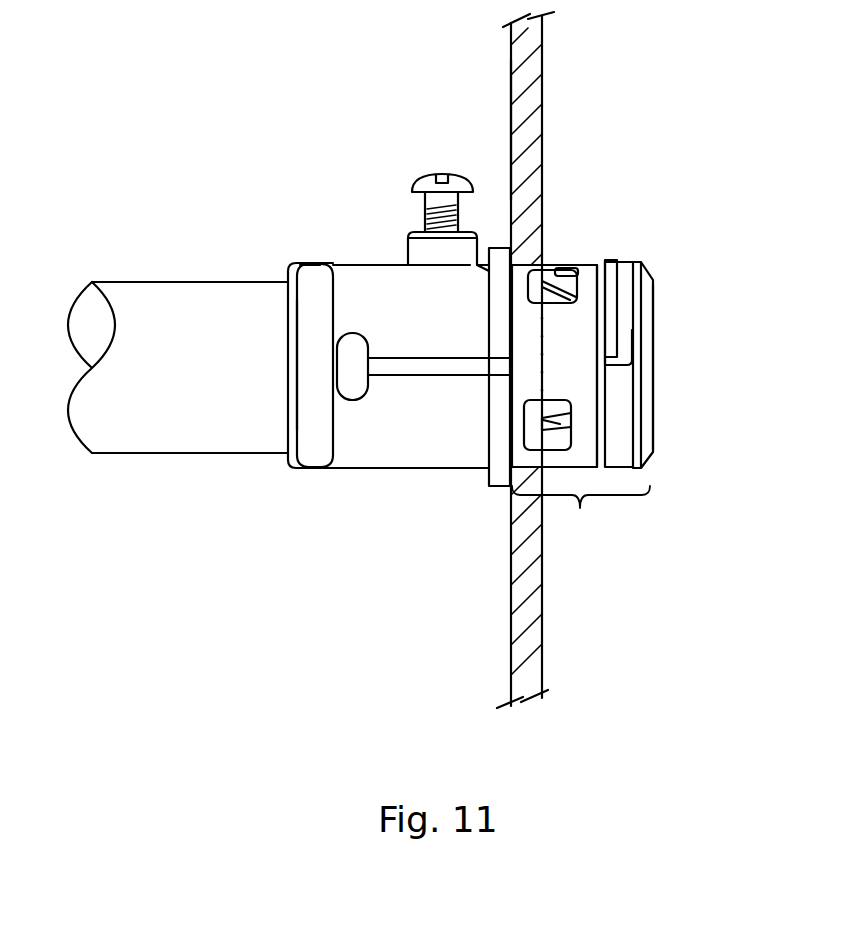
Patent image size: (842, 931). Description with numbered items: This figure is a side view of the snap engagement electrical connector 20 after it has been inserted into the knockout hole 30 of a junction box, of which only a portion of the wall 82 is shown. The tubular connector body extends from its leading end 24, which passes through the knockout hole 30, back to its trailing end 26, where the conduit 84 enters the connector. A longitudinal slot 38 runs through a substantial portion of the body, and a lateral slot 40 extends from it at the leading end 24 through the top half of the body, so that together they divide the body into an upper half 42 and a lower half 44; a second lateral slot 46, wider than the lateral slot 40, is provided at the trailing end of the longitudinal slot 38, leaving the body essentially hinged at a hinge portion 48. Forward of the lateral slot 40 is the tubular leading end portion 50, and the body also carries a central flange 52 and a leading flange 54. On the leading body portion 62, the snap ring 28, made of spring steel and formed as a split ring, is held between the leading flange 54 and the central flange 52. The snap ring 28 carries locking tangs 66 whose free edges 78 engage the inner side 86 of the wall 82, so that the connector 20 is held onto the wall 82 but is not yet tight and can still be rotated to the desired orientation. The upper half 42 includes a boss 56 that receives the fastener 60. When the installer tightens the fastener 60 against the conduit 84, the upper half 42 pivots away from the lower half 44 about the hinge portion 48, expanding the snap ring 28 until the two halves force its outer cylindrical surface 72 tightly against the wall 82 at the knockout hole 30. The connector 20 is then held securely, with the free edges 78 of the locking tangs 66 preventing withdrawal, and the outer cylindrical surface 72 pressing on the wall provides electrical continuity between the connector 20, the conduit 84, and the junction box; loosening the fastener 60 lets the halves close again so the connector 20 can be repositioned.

The snap engagement electrical connector 20 is at (330, 227).
The leading end 24 is at (655, 403).
The trailing end 26 is at (290, 327).
The snap ring 28 is at (582, 318).
The knockout hole 30 is at (346, 417).
The longitudinal slot 38 is at (418, 360).
The lateral slot 40 is at (636, 262).
The upper half 42 is at (385, 307).
The lower half 44 is at (430, 428).
The second lateral slot 46 is at (352, 385).
The hinge portion 48 is at (317, 365).
The tubular leading end portion 50 is at (650, 262).
The central flange 52 is at (499, 487).
The leading flange 54 is at (612, 262).
The boss 56 is at (417, 242).
The fastener 60 is at (434, 173).
The leading body portion 62 is at (581, 516).
The locking tangs 66 is at (548, 268).
The outer cylindrical surface 72 is at (553, 370).
The free edges 78 is at (543, 281).
The wall 82 is at (528, 610).
The conduit 84 is at (143, 337).
The inner side 86 is at (553, 97).